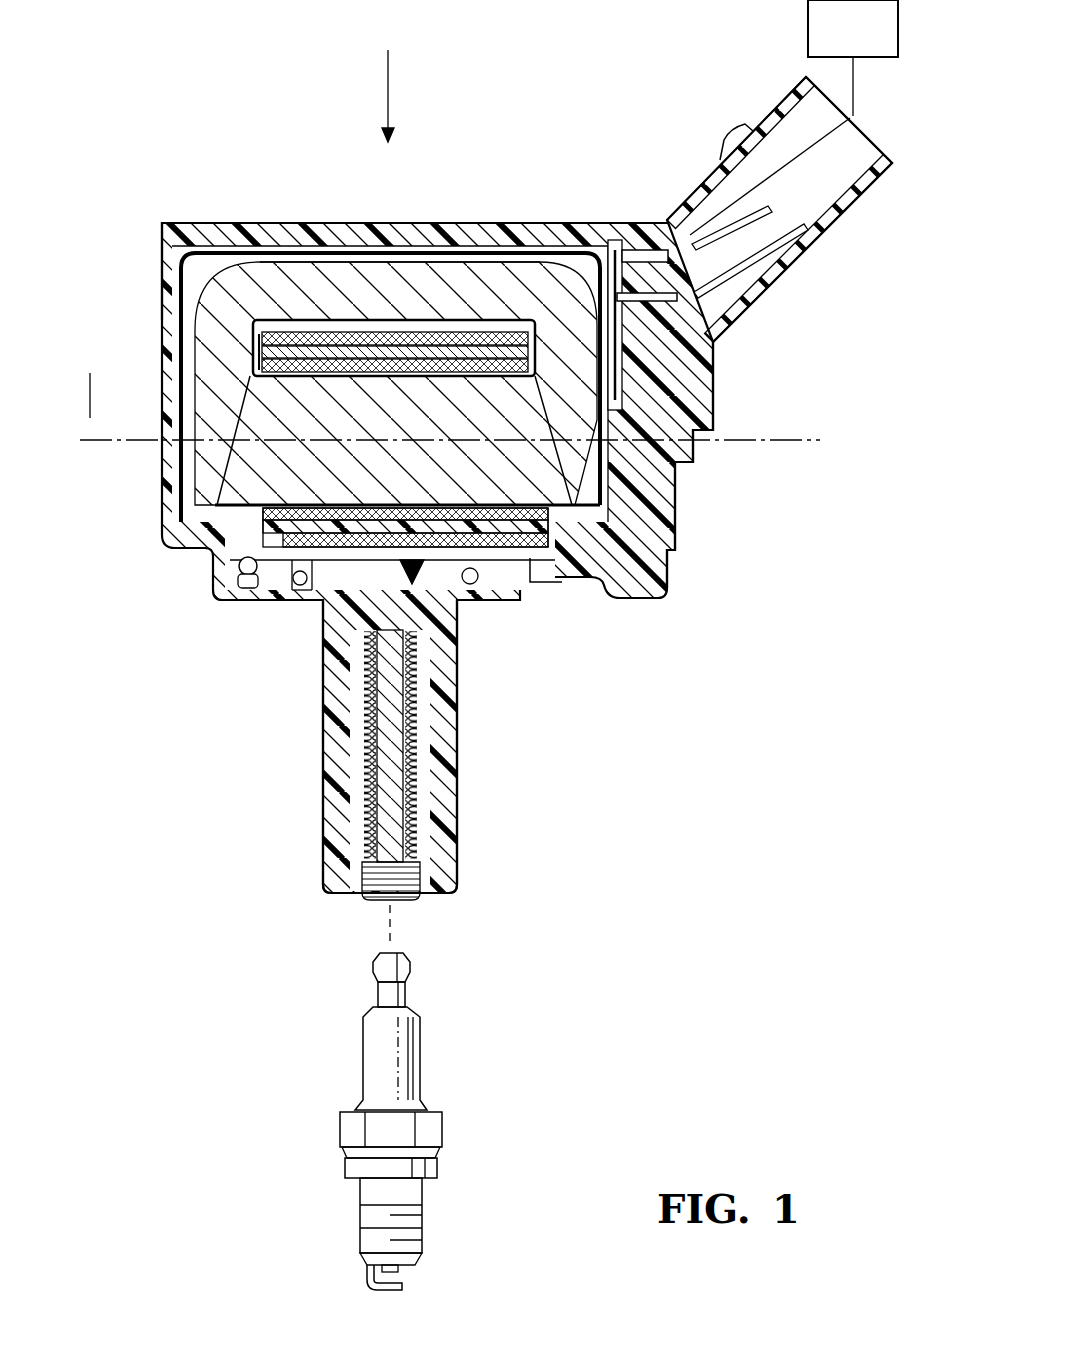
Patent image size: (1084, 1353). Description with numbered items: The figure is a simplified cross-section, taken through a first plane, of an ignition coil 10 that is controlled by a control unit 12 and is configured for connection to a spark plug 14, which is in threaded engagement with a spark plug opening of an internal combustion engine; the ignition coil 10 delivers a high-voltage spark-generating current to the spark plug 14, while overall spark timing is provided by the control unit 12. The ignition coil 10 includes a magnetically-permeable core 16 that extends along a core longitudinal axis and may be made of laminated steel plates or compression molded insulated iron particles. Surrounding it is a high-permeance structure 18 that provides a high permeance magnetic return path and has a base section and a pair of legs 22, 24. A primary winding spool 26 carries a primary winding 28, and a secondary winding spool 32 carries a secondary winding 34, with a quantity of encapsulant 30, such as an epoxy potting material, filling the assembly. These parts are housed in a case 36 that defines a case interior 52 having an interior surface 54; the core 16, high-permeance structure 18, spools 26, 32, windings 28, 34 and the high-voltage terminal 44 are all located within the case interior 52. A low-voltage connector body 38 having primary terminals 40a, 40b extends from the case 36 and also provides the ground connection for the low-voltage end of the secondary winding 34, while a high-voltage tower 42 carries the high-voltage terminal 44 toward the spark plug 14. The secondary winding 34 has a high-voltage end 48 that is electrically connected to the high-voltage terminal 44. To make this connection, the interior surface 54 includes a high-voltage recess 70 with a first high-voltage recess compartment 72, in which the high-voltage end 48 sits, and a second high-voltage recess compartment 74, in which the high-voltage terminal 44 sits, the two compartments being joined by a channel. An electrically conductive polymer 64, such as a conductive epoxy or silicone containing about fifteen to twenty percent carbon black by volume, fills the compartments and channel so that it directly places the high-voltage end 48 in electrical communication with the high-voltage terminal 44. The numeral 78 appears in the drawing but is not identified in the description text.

The ignition coil 10 is at (484, 465).
The control unit 12 is at (841, 41).
The spark plug 14 is at (425, 1055).
The magnetically-permeable core 16 is at (250, 462).
The high-permeance structure 18 is at (362, 275).
The leg 22 is at (197, 363).
The leg 24 is at (650, 435).
The primary winding spool 26 is at (298, 345).
The primary winding 28 is at (378, 365).
The encapsulant 30 is at (237, 222).
The secondary winding spool 32 is at (490, 338).
The secondary winding 34 is at (452, 338).
The case 36 is at (162, 270).
The low-voltage connector body 38 is at (722, 175).
The primary terminal 40a is at (722, 232).
The primary terminal 40b is at (705, 300).
The high-voltage tower 42 is at (325, 800).
The high-voltage terminal 44 is at (412, 588).
The high-voltage end 48 is at (248, 556).
The case interior 52 is at (615, 250).
The interior surface 54 is at (545, 580).
The electrically conductive polymer 64 is at (435, 590).
The high-voltage recess 70 is at (305, 592).
The first high-voltage recess compartment 72 is at (250, 580).
The second high-voltage recess compartment 74 is at (372, 628).
The cap 78 is at (260, 592).